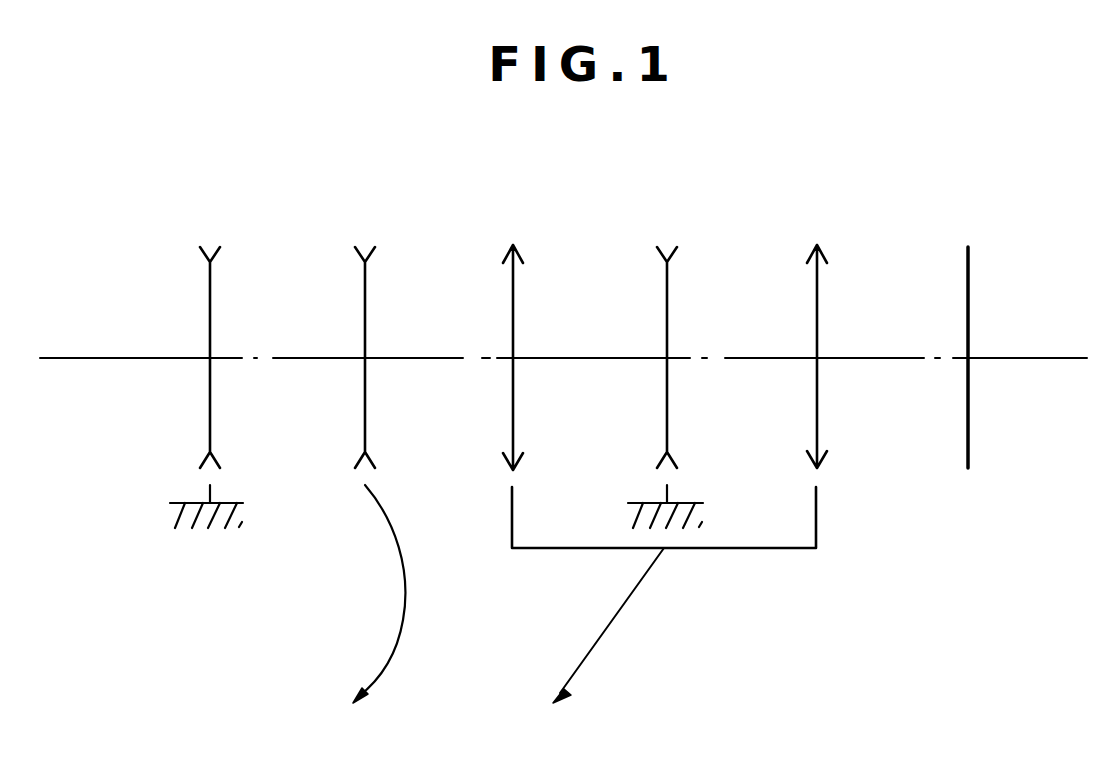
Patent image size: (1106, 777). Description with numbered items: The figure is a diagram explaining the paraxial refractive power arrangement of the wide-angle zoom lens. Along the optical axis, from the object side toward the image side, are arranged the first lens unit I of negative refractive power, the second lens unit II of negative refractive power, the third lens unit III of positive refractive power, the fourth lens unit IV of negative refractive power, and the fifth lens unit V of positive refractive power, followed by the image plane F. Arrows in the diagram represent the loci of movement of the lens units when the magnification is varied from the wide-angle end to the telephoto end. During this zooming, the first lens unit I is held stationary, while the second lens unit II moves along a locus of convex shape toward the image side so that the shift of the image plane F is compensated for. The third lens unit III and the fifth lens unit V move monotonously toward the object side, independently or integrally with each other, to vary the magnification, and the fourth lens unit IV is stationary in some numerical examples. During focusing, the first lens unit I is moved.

The first lens unit I is at (210, 287).
The second lens unit II is at (365, 287).
The third lens unit III is at (513, 287).
The fourth lens unit IV is at (667, 287).
The fifth lens unit V is at (817, 287).
The image plane F is at (968, 287).